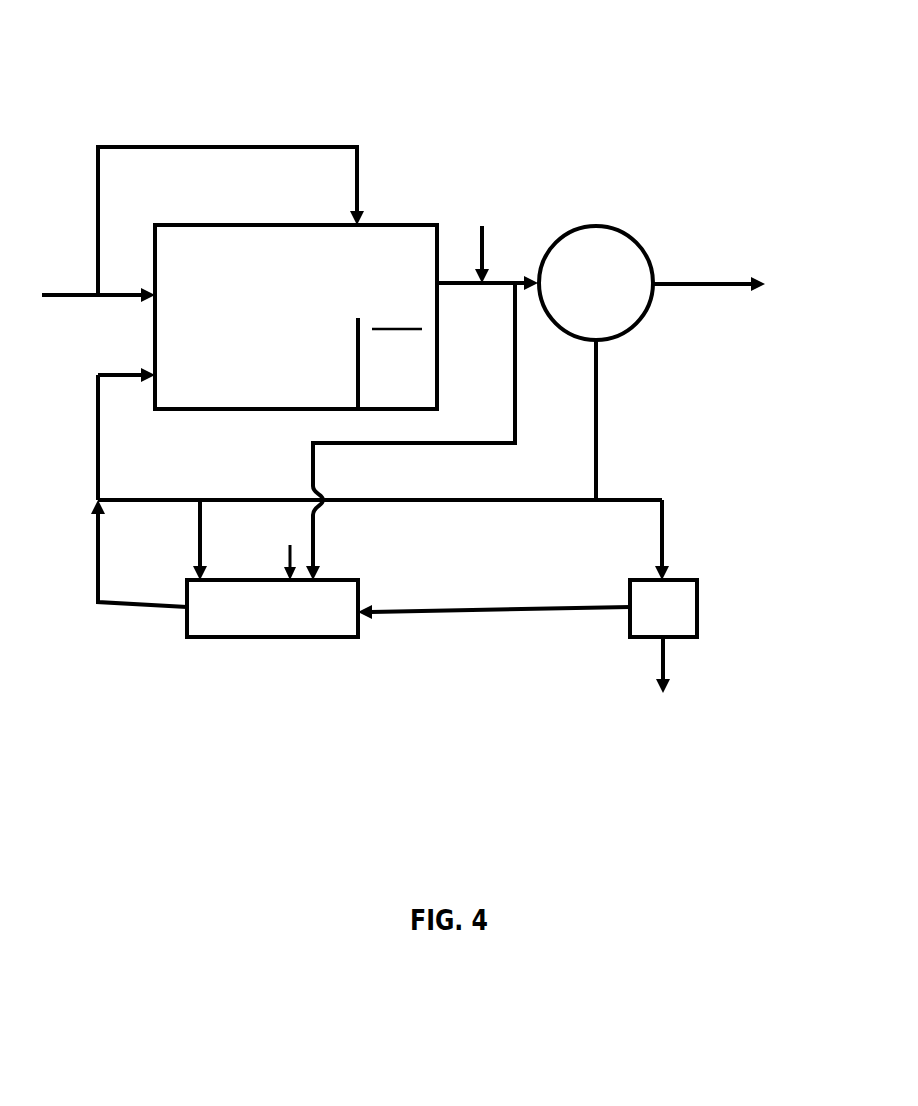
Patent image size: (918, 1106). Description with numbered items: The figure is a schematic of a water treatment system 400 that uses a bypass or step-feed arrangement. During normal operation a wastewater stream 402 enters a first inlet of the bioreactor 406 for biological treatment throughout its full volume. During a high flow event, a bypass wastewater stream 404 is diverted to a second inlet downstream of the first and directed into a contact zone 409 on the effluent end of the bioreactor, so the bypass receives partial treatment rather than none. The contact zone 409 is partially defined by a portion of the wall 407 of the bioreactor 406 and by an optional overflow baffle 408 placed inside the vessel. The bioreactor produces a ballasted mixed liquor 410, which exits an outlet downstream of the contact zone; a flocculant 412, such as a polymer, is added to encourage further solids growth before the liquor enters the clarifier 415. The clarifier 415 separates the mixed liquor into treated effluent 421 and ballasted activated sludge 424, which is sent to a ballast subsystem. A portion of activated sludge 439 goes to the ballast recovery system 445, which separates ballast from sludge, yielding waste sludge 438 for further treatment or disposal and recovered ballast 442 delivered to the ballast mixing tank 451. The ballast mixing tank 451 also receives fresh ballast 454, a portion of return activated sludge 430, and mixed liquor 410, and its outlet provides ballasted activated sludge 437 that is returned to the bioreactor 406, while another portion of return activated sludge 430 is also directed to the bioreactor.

The water treatment system 400 is at (678, 134).
The wastewater stream 402 is at (117, 300).
The bypass wastewater stream 404 is at (208, 145).
The bioreactor 406 is at (260, 205).
The wall 407 is at (439, 355).
The overflow baffle 408 is at (355, 358).
The contact zone 409 is at (397, 313).
The mixed liquor 410 is at (458, 285).
The flocculant 412 is at (485, 235).
The clarifier 415 is at (642, 320).
The treated effluent 421 is at (708, 280).
The activated sludge 424 is at (598, 453).
The return activated sludge 430 is at (427, 503).
The ballasted activated sludge 437 is at (142, 608).
The waste sludge 438 is at (667, 660).
The portion of activated sludge 439 is at (667, 535).
The recovered ballast 442 is at (482, 603).
The ballast recovery system 445 is at (698, 588).
The ballast mixing tank 451 is at (273, 638).
The fresh ballast 454 is at (260, 547).